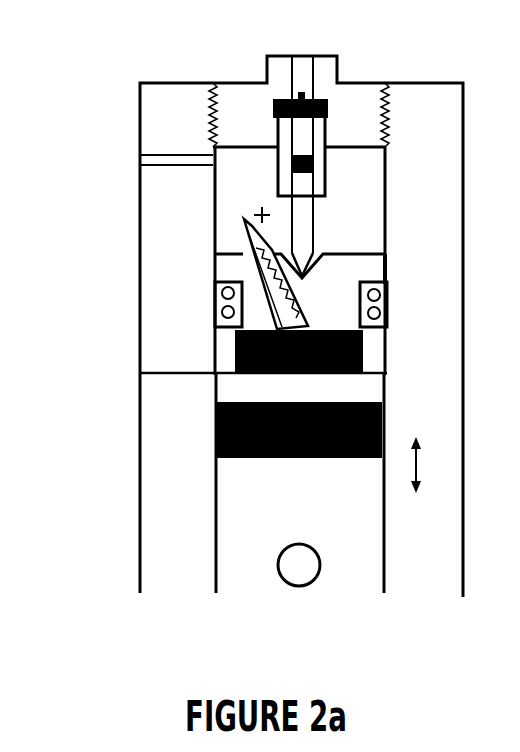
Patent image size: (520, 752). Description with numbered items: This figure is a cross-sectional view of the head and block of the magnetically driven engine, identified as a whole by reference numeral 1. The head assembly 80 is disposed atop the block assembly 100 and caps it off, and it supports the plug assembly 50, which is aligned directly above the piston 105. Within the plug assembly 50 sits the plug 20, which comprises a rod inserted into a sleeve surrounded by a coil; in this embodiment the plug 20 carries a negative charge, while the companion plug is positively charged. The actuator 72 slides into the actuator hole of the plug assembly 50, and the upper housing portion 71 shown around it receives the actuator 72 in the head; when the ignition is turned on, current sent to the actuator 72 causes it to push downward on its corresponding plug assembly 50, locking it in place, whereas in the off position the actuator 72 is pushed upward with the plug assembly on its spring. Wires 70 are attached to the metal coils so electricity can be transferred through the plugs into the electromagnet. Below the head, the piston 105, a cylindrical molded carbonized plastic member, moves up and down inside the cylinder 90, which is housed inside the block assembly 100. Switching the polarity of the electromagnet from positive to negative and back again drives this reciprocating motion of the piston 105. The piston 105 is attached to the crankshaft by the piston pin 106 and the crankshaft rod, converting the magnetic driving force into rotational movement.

The valve assembly 1 is at (330, 326).
The plug 20 is at (232, 236).
The plug assembly 50 is at (328, 302).
The wires 70 is at (210, 155).
The solenoid housing / needle 71 is at (343, 100).
The actuator 72 is at (302, 138).
The head assembly 80 is at (167, 228).
The cylinder 90 is at (252, 393).
The block assembly 100 is at (147, 490).
The piston 105 is at (270, 460).
The piston pin 106 is at (293, 568).